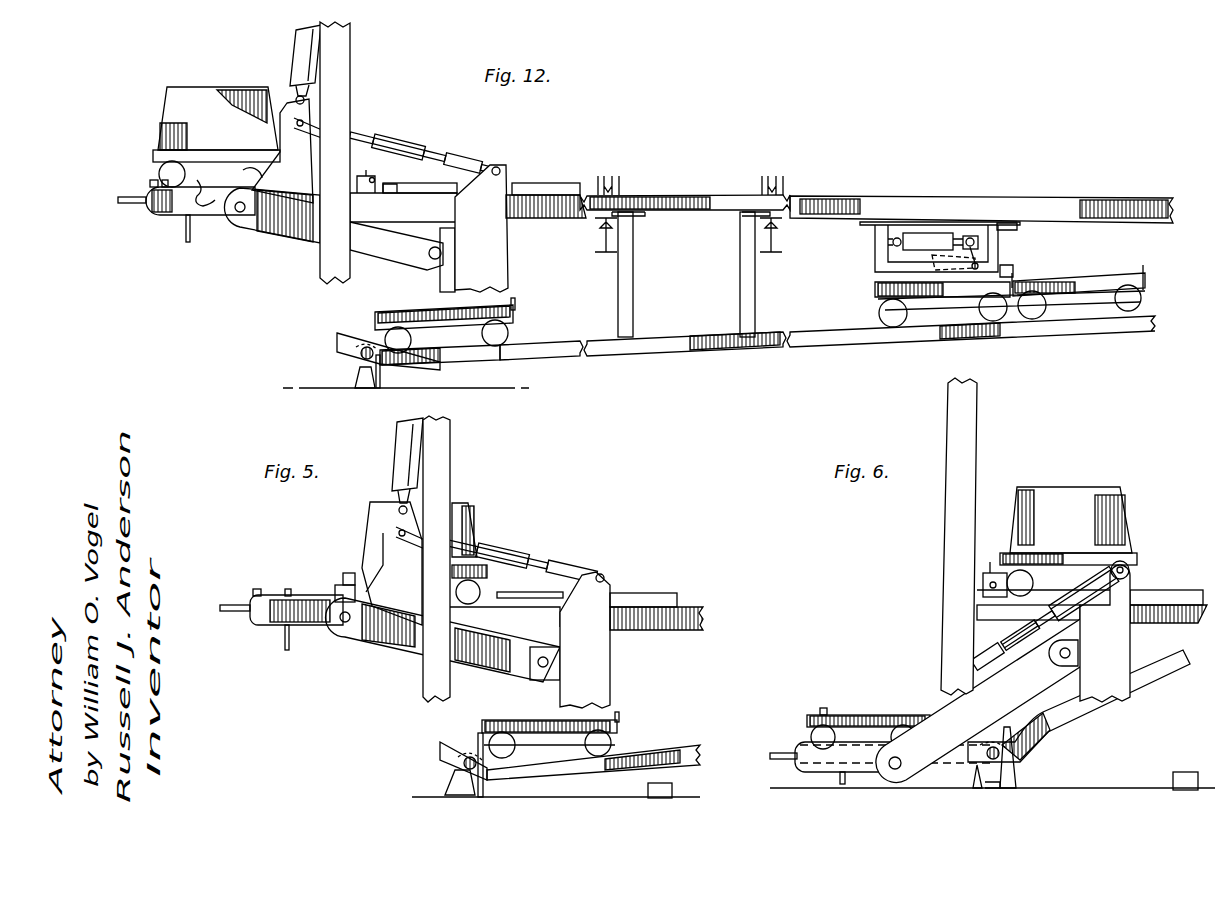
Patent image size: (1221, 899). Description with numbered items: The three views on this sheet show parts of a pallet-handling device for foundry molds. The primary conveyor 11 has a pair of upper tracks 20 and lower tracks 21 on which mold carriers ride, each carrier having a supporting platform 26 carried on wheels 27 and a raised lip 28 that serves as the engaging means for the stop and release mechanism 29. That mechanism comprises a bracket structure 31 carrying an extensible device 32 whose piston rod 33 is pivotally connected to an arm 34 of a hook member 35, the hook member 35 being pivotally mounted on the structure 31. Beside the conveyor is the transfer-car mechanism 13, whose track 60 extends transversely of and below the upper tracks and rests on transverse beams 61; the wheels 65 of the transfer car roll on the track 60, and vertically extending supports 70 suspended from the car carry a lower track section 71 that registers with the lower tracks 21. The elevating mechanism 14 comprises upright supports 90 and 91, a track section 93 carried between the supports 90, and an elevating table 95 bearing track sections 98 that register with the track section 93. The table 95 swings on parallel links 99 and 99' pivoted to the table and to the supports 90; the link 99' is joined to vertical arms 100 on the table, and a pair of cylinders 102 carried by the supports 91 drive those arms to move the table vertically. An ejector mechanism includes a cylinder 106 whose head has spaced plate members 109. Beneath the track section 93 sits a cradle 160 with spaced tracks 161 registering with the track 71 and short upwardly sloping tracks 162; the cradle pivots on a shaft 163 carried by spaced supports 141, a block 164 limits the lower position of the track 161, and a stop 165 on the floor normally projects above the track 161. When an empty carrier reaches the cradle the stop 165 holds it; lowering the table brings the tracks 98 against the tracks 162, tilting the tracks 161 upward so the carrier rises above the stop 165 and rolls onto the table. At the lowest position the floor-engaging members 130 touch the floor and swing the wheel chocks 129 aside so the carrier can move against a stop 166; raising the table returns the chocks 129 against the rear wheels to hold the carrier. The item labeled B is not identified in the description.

In FIG. 12, the primary conveyor 11 is at (926, 195).
In FIG. 12, the transfer-car mechanism 13 is at (700, 175).
In FIG. 12, the elevating mechanism 14 is at (288, 300).
In FIG. 12, the upper tracks 20 is at (1112, 198).
In FIG. 12, the lower tracks 21 is at (835, 340).
In FIG. 12, the supporting platform 26 is at (515, 312).
In FIG. 5, the supporting platform 26 is at (550, 728).
In FIG. 6, the supporting platform 26 is at (868, 721).
In FIG. 12, the wheels 27 is at (485, 333).
In FIG. 5, the wheels 27 is at (585, 743).
In FIG. 6, the wheels 27 is at (863, 737).
In FIG. 12, the raised lip 28 is at (1016, 273).
In FIG. 12, the stop and release mechanism 29 is at (868, 256).
In FIG. 12, the bracket structure 31 is at (1000, 224).
In FIG. 12, the extensible device 32 is at (930, 233).
In FIG. 12, the piston rod 33 is at (972, 236).
In FIG. 12, the arm 34 is at (985, 255).
In FIG. 12, the hook member 35 is at (1018, 266).
In FIG. 12, the track 60 is at (626, 225).
In FIG. 12, the transverse beams 61 is at (596, 236).
In FIG. 12, the wheels 65 is at (620, 186).
In FIG. 12, the vertically extending supports 70 is at (630, 308).
In FIG. 12, the lower track section 71 is at (690, 350).
In FIG. 12, the upright supports 90 is at (505, 255).
In FIG. 5, the upright supports 90 is at (608, 672).
In FIG. 6, the upright supports 90 is at (1118, 652).
In FIG. 12, the upright supports 91 is at (333, 282).
In FIG. 5, the upright supports 91 is at (427, 698).
In FIG. 6, the upright supports 91 is at (970, 468).
In FIG. 12, the track section 93 is at (574, 200).
In FIG. 5, the track section 93 is at (660, 605).
In FIG. 6, the track section 93 is at (1189, 623).
In FIG. 12, the elevating table 95 is at (200, 215).
In FIG. 5, the elevating table 95 is at (287, 599).
In FIG. 6, the elevating table 95 is at (810, 742).
In FIG. 12, the track sections 98 is at (207, 192).
In FIG. 6, the track sections 98 is at (977, 768).
In FIG. 12, the parallel link 99 is at (340, 229).
In FIG. 5, the parallel link 99 is at (443, 640).
In FIG. 6, the parallel link 99 is at (986, 699).
In FIG. 12, the parallel link 99' is at (429, 150).
In FIG. 5, the parallel link 99' is at (521, 552).
In FIG. 6, the parallel link 99' is at (1049, 617).
In FIG. 12, the vertical arms 100 is at (322, 140).
In FIG. 5, the vertical arms 100 is at (393, 563).
In FIG. 12, the cylinders 102 is at (335, 62).
In FIG. 5, the cylinders 102 is at (407, 466).
In FIG. 6, the cylinders 102 is at (945, 600).
In FIG. 12, the cylinder 106 is at (540, 183).
In FIG. 6, the cylinder 106 is at (1165, 590).
In FIG. 12, the spaced plate members 109 is at (387, 180).
In FIG. 12, the wheel-engaging members 129 is at (170, 215).
In FIG. 5, the wheel-engaging members 129 is at (290, 589).
In FIG. 12, the floor-engaging members 130 is at (186, 234).
In FIG. 6, the floor-engaging members 130 is at (840, 784).
In FIG. 12, the spaced supports 141 is at (352, 375).
In FIG. 5, the spaced supports 141 is at (455, 772).
In FIG. 12, the cradle 160 is at (554, 370).
In FIG. 5, the cradle 160 is at (660, 752).
In FIG. 12, the spaced tracks 161 is at (486, 352).
In FIG. 6, the spaced tracks 161 is at (1080, 718).
In FIG. 12, the short tracks 162 is at (345, 338).
In FIG. 5, the short tracks 162 is at (463, 761).
In FIG. 12, the shaft 163 is at (358, 356).
In FIG. 5, the shaft 163 is at (470, 761).
In FIG. 12, the block 164 is at (530, 384).
In FIG. 5, the block 164 is at (650, 786).
In FIG. 6, the block 164 is at (1178, 778).
In FIG. 12, the stop 165 is at (390, 372).
In FIG. 5, the stop 165 is at (486, 785).
In FIG. 6, the stop 165 is at (992, 757).
In FIG. 12, the stop 166 is at (152, 180).
In FIG. 5, the stop 166 is at (257, 589).
In FIG. 6, the stop 166 is at (822, 708).
In FIG. 5, the bale B is at (470, 520).
In FIG. 6, the bale B is at (1115, 520).